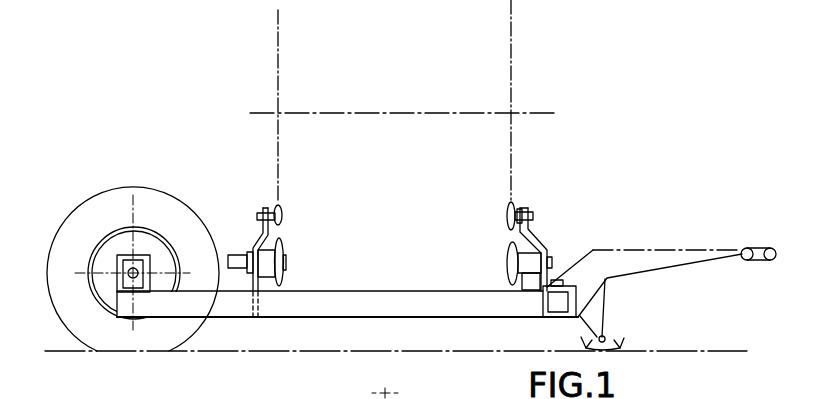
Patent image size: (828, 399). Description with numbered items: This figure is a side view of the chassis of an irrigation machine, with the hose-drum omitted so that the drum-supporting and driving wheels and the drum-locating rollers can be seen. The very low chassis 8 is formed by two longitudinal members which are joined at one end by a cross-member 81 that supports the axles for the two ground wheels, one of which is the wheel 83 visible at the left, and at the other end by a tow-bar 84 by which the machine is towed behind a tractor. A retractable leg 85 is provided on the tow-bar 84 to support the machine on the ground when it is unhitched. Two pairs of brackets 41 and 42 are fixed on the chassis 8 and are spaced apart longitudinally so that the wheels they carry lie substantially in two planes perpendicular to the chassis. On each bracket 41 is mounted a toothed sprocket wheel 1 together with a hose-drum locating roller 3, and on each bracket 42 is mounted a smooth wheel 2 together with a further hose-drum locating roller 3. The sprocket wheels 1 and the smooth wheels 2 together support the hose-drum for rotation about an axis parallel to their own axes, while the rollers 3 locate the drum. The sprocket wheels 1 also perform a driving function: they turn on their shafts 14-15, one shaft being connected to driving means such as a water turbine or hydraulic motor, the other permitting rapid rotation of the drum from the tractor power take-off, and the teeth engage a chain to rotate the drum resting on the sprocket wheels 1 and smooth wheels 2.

The toothed sprocket wheel 1 is at (284, 243).
The smooth wheel 2 is at (507, 257).
The hose-drum locating roller 3 is at (283, 207).
The chassis 8 is at (388, 303).
The shafts 14-15 is at (238, 269).
The bracket 41 is at (262, 246).
The bracket 42 is at (535, 233).
The cross-member 81 is at (137, 266).
The wheel 83 is at (91, 214).
The tow-bar 84 is at (636, 259).
The retractable leg 85 is at (598, 313).